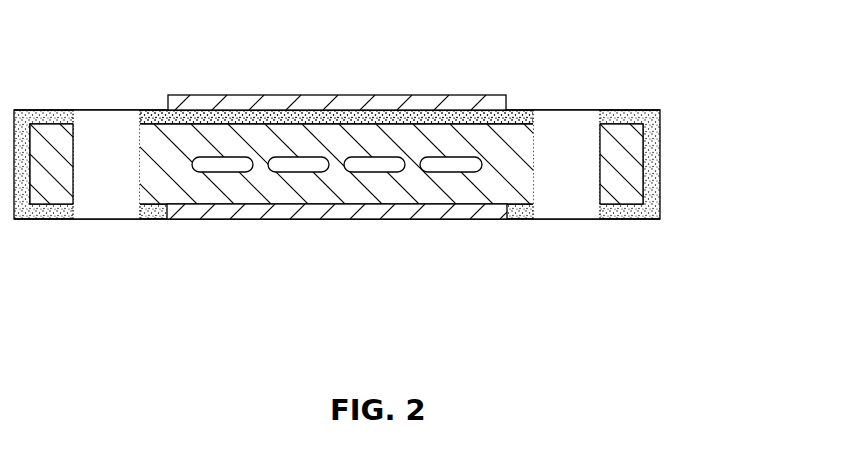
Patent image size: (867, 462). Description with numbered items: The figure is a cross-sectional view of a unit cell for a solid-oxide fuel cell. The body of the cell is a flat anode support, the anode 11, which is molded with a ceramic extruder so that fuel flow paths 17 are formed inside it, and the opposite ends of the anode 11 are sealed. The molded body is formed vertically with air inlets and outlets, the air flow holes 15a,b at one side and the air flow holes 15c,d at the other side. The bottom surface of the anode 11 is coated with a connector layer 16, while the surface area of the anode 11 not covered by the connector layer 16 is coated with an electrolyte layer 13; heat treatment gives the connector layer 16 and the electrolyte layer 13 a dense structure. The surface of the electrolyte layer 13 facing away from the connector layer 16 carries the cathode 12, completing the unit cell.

The anode 11 is at (636, 148).
The cathode 12 is at (466, 95).
The electrolyte layer 13 is at (158, 118).
The air flow holes 15a,b is at (103, 116).
The air flow holes 15c,d is at (577, 210).
The connector layer 16 is at (457, 220).
The fuel flow paths 17 is at (452, 168).